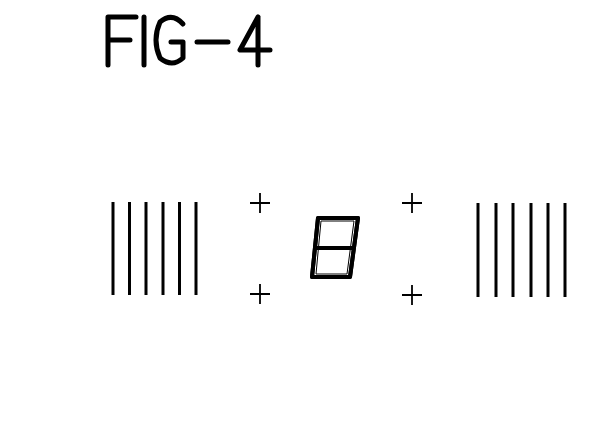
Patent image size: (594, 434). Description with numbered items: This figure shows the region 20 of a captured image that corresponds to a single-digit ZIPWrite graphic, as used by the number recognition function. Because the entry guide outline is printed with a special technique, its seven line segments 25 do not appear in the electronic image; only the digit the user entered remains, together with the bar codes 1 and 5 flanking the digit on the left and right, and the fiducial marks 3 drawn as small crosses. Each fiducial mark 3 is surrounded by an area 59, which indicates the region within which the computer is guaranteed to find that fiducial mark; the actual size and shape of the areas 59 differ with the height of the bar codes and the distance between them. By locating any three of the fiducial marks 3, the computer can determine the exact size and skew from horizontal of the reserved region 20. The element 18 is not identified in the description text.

The bar code 1 is at (157, 200).
The fiducial marks 3 is at (262, 198).
The areas surrounding each fiducial mark 59 is at (259, 300).
The line segments 25 is at (337, 218).
The pixel substrate 18 is at (335, 280).
The region of a captured image 20 is at (425, 155).
The bar code 5 is at (518, 200).